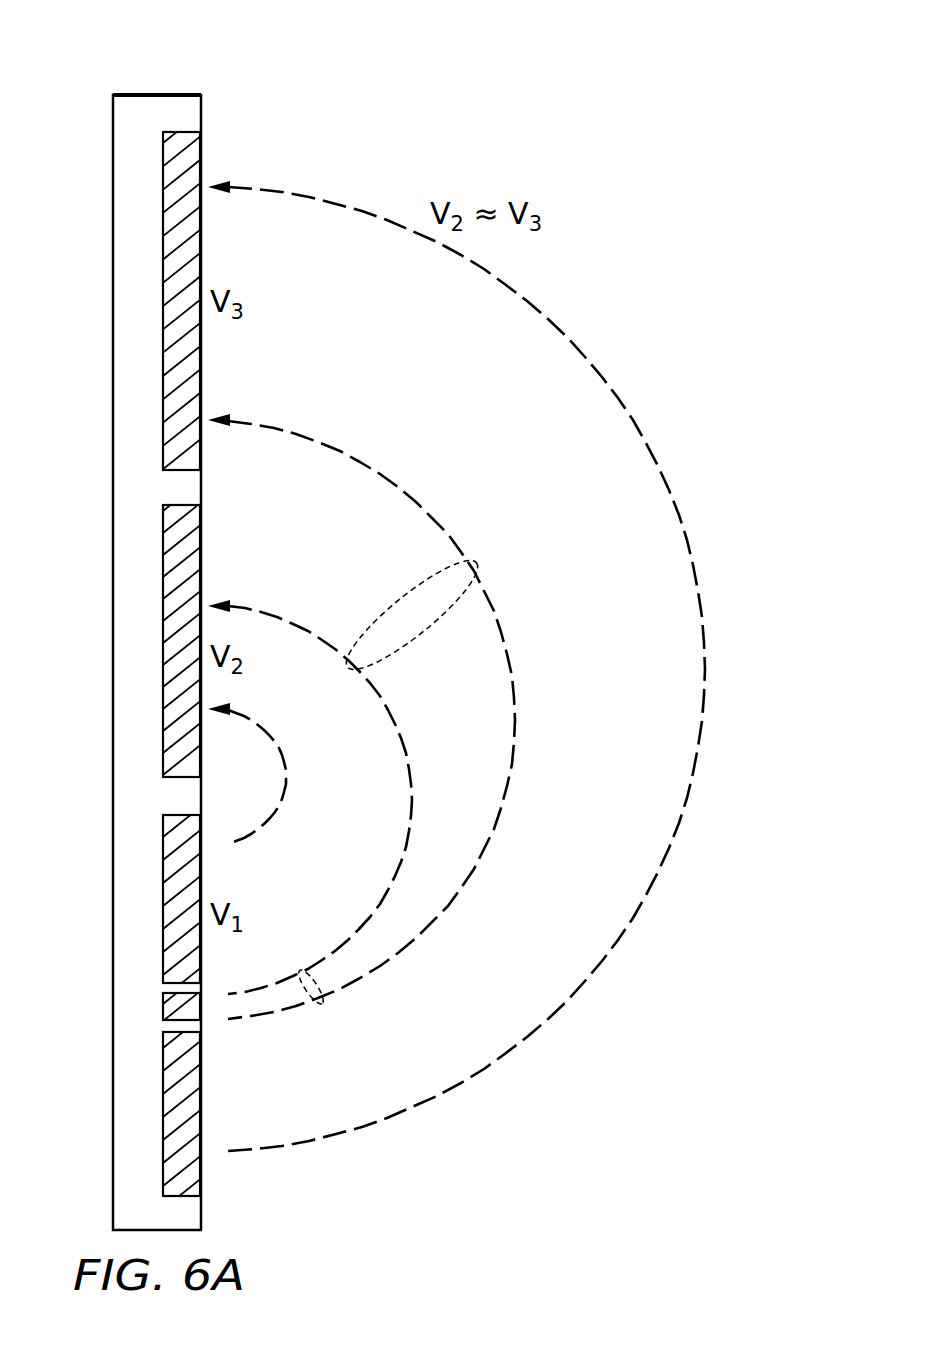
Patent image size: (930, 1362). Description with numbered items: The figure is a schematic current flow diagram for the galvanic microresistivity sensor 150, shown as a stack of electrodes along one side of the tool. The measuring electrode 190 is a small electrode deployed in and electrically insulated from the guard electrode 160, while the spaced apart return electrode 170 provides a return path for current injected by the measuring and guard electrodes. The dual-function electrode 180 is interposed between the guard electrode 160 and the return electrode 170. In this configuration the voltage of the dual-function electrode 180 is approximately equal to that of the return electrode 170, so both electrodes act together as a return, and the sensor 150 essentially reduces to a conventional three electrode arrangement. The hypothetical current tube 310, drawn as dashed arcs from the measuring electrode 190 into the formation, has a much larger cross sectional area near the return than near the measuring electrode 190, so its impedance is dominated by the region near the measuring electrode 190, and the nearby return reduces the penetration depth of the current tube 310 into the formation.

The galvanic microresistivity sensor 150 is at (155, 82).
The guard electrode 160 is at (200, 862).
The return electrode 170 is at (200, 263).
The dual-function electrode 180 is at (200, 547).
The measuring electrode 190 is at (164, 1000).
The current tube 310 is at (517, 740).